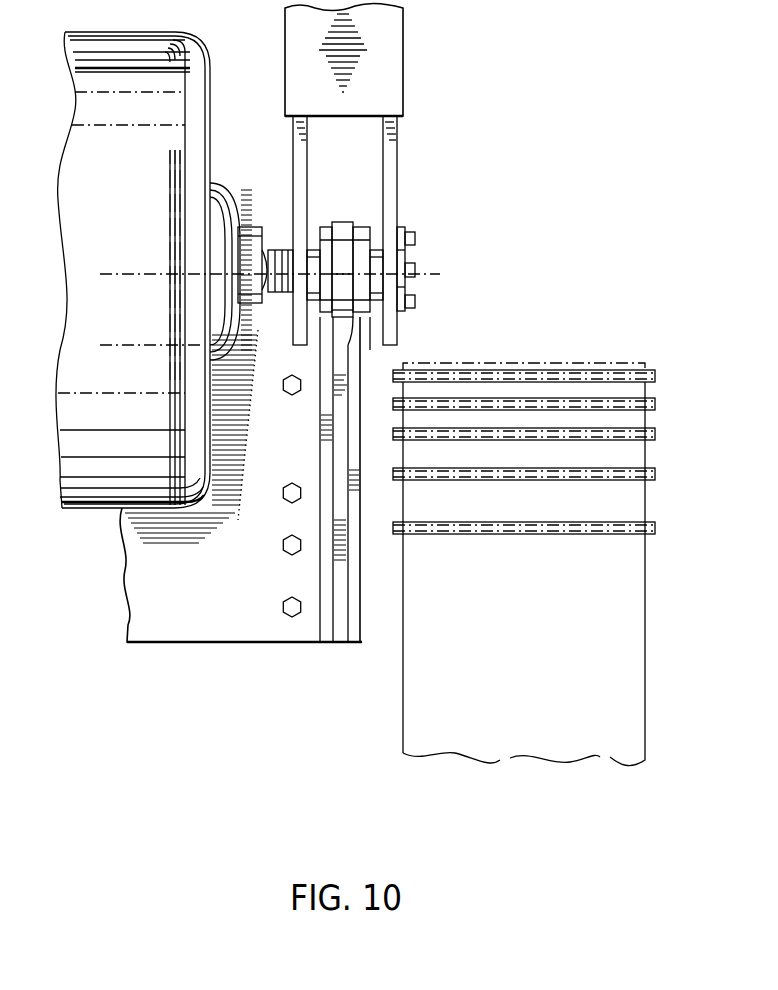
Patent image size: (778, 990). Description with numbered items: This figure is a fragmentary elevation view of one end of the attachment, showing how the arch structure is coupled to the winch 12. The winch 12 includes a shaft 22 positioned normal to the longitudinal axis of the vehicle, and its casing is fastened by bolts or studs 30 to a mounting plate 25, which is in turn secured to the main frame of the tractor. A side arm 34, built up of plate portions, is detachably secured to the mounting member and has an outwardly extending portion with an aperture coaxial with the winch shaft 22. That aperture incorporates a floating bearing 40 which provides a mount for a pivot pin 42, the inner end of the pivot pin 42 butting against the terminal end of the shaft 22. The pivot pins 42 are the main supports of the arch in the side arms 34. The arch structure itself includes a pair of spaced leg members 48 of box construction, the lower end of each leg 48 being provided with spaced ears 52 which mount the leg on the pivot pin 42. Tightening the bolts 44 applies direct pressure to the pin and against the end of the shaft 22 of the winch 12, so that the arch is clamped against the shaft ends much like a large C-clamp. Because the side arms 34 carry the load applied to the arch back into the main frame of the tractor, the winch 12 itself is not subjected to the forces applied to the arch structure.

The winch 12 is at (80, 156).
The shaft 22 is at (270, 248).
The mounting plate 25 is at (155, 578).
The bolts or studs 30 is at (295, 616).
The side arms 34 is at (355, 600).
The floating bearing 40 is at (363, 224).
The pivot pin 42 is at (287, 300).
The bolts 44 is at (415, 270).
The leg members 48 is at (390, 30).
The ears 52 is at (390, 160).